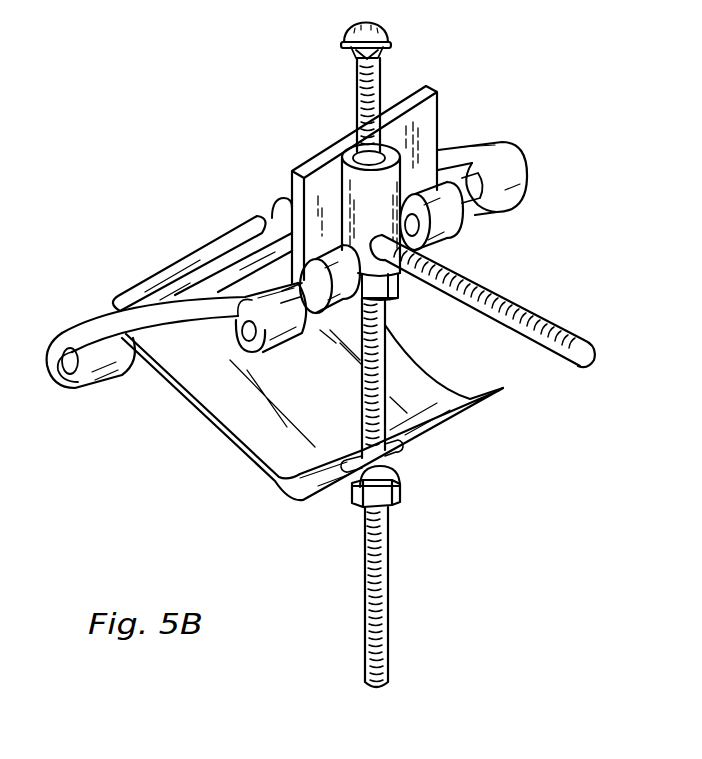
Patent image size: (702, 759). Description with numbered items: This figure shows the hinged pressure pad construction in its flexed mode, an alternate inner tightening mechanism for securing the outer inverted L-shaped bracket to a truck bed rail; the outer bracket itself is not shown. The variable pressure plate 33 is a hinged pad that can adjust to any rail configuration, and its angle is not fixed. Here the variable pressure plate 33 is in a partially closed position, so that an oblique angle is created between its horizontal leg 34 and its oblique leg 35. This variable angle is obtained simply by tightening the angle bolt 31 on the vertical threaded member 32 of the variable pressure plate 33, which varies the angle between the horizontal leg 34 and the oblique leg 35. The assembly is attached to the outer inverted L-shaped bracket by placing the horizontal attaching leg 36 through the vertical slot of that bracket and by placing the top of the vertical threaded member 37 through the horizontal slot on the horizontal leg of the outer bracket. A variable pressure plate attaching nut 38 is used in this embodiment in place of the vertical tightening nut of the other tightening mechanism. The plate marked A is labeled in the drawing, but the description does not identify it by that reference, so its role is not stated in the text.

The angle bolt 31 is at (401, 491).
The vertical threaded member 32 is at (383, 597).
The variable pressure plate 33 is at (252, 417).
The horizontal leg 34 is at (308, 166).
The oblique leg 35 is at (185, 290).
The horizontal attaching leg 36 is at (537, 317).
The vertical threaded member 37 is at (357, 82).
The variable pressure plate attaching nut 38 is at (381, 48).
The plate A is at (435, 92).